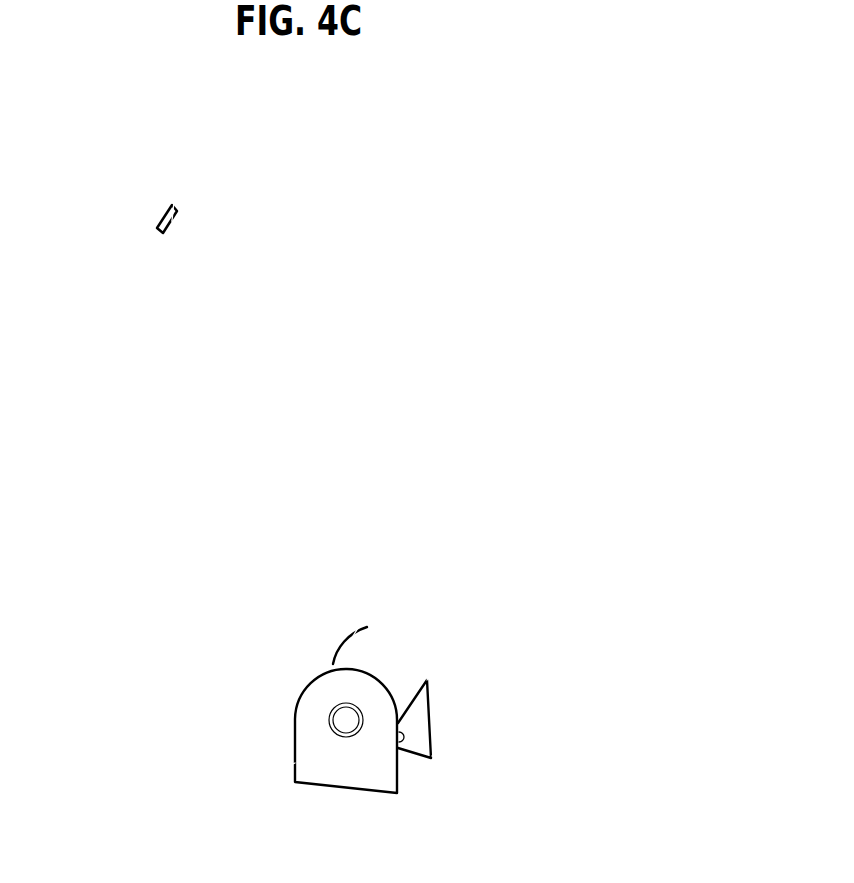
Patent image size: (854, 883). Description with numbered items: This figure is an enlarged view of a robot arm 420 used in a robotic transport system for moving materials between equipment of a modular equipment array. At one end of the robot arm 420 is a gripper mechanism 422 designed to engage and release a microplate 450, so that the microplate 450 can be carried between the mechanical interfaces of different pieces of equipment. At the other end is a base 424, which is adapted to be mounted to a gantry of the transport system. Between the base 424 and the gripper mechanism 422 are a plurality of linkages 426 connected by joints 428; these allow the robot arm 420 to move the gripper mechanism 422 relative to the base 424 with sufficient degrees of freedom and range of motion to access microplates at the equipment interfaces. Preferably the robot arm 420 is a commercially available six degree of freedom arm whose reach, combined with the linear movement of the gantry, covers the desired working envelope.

The robot arm 420 is at (577, 279).
The gripper mechanism 422 is at (170, 238).
The base 424 is at (262, 812).
The linkages 426 is at (417, 328).
The joints 428 is at (223, 164).
The microplate 450 is at (128, 211).